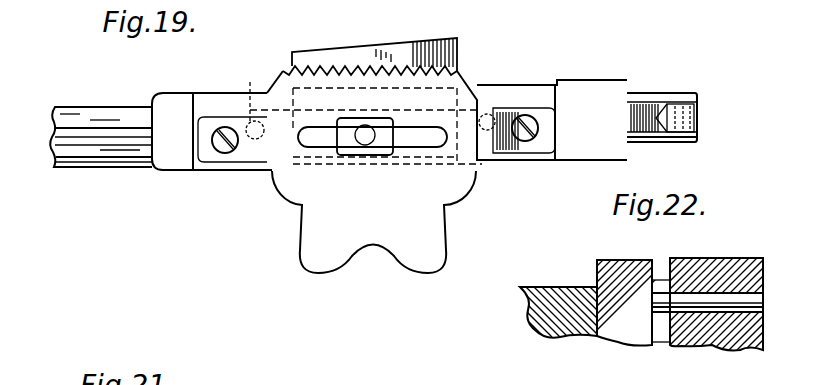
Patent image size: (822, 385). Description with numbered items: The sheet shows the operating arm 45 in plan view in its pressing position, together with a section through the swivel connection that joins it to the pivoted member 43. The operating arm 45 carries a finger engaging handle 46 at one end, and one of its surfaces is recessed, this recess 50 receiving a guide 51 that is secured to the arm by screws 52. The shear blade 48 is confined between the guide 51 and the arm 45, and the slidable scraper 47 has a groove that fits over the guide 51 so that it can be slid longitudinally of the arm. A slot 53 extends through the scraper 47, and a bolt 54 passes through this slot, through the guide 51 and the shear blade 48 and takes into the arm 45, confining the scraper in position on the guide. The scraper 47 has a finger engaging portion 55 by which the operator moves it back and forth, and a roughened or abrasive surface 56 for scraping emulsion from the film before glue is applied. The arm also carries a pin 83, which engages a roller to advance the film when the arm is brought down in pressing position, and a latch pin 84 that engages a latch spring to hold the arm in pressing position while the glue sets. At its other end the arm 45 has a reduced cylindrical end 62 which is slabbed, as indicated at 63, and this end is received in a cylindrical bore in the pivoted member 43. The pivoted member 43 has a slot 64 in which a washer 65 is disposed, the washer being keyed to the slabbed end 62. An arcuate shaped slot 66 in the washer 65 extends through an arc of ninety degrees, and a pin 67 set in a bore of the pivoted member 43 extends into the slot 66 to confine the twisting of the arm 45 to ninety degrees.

In FIG. 19, the finger engaging handle 46 is at (105, 168).
In FIG. 19, the screws 52 is at (218, 153).
In FIG. 19, the guide 51 is at (257, 150).
In FIG. 19, the latch pin 84 is at (250, 82).
In FIG. 19, the roughened or abrasive surface 56 is at (312, 60).
In FIG. 19, the shear blade 48 is at (458, 39).
In FIG. 19, the pin 83 is at (490, 113).
In FIG. 19, the recess 50 is at (553, 86).
In FIG. 19, the operating arm 45 is at (590, 90).
In FIG. 22, the operating arm 45 is at (565, 290).
In FIG. 19, the slabbed portion 63 is at (651, 116).
In FIG. 19, the reduced cylindrical end 62 is at (688, 94).
In FIG. 19, the slidable scraper 47 is at (444, 200).
In FIG. 19, the finger engaging portion 55 is at (300, 216).
In FIG. 19, the bolt 54 is at (360, 154).
In FIG. 19, the slot 53 is at (409, 148).
In FIG. 22, the washer 65 is at (656, 280).
In FIG. 22, the slot 64 is at (672, 280).
In FIG. 22, the pin 67 is at (764, 299).
In FIG. 22, the arcuate shaped slot 66 is at (666, 320).
In FIG. 22, the pivoted member 43 is at (750, 340).